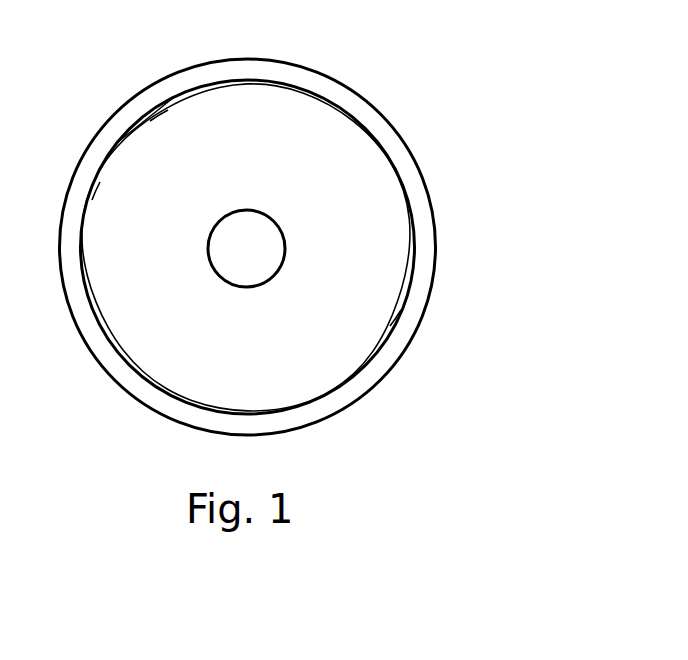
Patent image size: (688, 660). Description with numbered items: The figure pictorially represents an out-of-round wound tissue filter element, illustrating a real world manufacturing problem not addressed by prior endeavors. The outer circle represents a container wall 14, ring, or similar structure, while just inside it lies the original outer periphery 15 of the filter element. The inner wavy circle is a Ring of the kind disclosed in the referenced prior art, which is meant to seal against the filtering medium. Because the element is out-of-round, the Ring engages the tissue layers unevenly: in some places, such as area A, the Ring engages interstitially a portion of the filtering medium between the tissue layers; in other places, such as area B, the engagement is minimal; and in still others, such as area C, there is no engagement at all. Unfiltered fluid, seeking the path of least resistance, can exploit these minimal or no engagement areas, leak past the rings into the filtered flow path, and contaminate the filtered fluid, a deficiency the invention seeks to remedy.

The container wall 14 is at (390, 122).
The original outer periphery 15 is at (392, 156).
The ring Ring is at (413, 243).
The area A is at (90, 204).
The area B is at (399, 313).
The area C is at (150, 121).